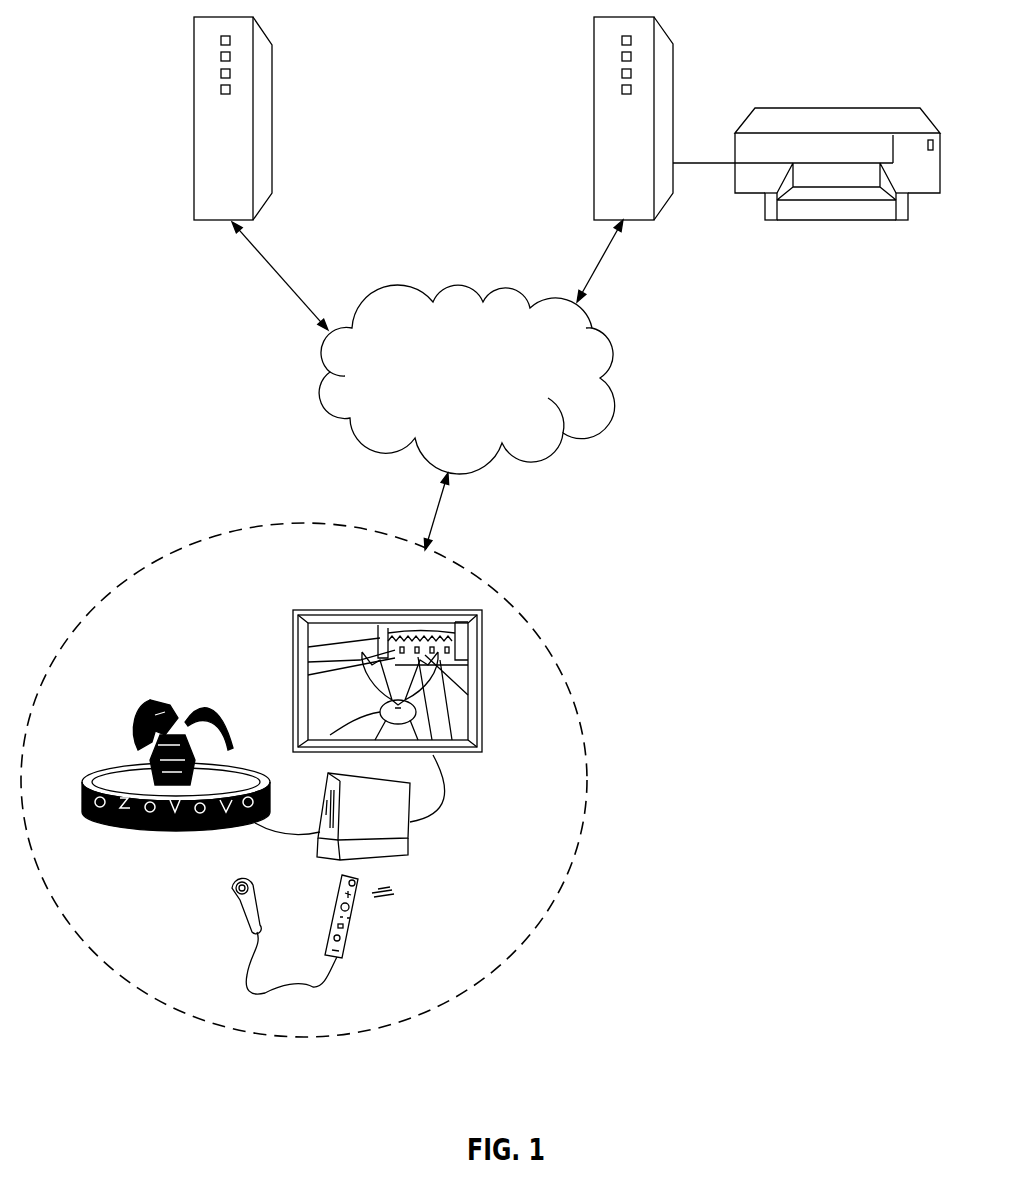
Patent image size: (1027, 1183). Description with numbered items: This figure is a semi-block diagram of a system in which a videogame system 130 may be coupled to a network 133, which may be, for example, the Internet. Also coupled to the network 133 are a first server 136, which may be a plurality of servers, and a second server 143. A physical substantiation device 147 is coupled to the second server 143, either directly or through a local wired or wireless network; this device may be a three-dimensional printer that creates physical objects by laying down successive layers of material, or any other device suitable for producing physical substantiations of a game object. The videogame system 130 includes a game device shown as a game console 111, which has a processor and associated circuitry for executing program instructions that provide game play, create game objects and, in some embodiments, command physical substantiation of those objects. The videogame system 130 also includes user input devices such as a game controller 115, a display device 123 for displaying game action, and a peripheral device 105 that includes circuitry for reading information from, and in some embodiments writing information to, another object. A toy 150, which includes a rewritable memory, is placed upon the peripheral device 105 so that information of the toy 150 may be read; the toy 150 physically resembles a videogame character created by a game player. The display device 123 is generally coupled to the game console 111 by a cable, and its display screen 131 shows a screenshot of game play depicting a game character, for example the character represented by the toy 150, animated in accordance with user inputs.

The peripheral device 105 is at (147, 833).
The game console 111 is at (408, 828).
The game controller 115 is at (350, 922).
The display device 123 is at (415, 650).
The videogame system 130 is at (545, 640).
The display screen 131 is at (325, 622).
The network 133 is at (613, 405).
The first server 136 is at (273, 118).
The second server 143 is at (654, 220).
The physical substantiation device 147 is at (837, 220).
The toy 150 is at (150, 700).